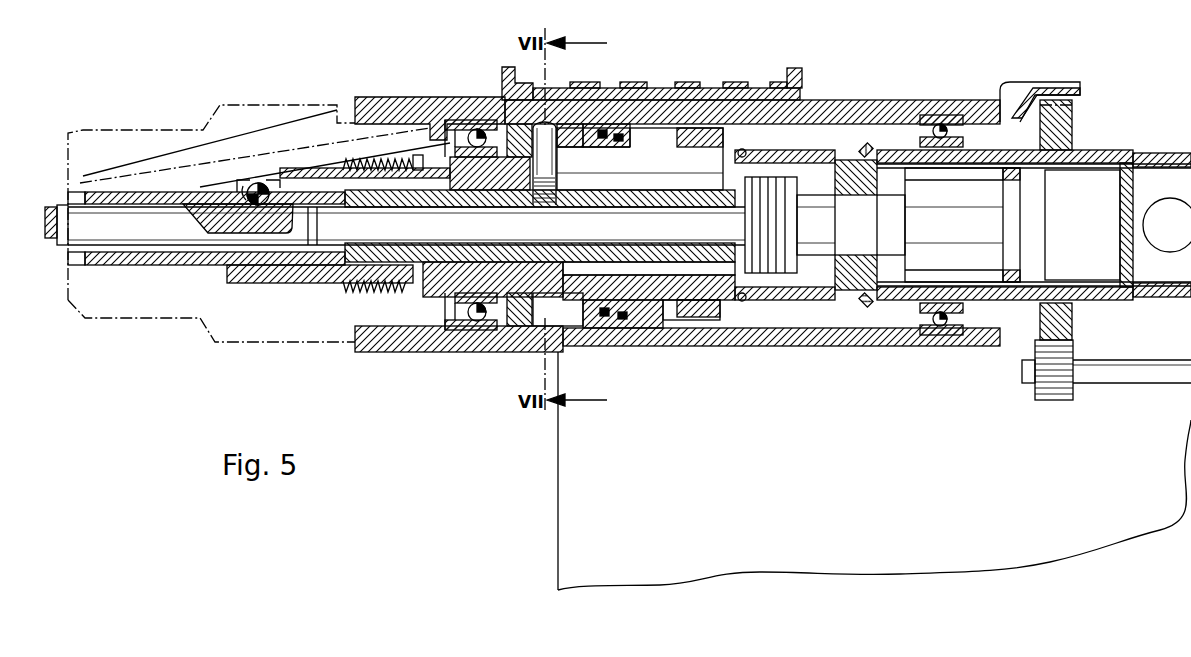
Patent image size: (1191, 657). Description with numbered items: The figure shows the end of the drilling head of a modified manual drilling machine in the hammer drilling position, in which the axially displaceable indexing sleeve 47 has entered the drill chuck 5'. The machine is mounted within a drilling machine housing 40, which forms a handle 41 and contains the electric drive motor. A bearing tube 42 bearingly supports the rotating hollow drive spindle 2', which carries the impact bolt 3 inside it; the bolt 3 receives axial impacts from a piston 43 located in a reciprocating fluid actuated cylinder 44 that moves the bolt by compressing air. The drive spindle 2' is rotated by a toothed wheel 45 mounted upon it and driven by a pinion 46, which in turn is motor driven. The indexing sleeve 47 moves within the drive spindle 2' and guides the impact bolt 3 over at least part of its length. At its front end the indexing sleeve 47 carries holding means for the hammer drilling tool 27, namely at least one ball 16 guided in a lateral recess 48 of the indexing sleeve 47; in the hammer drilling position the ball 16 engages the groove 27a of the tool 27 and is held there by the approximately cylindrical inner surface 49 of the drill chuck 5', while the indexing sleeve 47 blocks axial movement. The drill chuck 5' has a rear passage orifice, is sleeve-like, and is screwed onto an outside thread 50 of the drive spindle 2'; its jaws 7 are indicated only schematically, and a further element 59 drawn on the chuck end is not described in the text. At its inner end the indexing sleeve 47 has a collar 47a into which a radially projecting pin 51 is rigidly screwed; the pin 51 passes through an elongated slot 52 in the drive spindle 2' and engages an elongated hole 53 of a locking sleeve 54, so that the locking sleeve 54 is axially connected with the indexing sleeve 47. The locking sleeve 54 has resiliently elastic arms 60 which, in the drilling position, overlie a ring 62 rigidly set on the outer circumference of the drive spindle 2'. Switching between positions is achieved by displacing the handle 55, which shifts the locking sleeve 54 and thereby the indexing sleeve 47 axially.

The drive spindle 2' is at (720, 264).
The impact bolt 3 is at (514, 236).
The drill chuck 5' is at (211, 204).
The jaws 7 is at (317, 113).
The ball 16 is at (258, 183).
The hammer drilling tool 27 is at (108, 217).
The groove 27a is at (213, 222).
The drilling machine housing 40 is at (556, 533).
The handle 41 is at (850, 492).
The bearing tube 42 is at (850, 104).
The piston 43 is at (978, 248).
The cylinder 44 is at (1083, 170).
The toothed wheel 45 is at (1064, 124).
The pinion 46 is at (1057, 403).
The indexing sleeve 47 is at (223, 258).
The collar 47a is at (556, 260).
The lateral recess 48 is at (244, 192).
The cylindrical inner surface 49 is at (250, 180).
The outside thread 50 is at (360, 262).
The pin 51 is at (548, 162).
The elongated slot 52 is at (671, 160).
The elongated hole 53 is at (500, 125).
The locking sleeve 54 is at (576, 330).
The handle 55 is at (694, 86).
The nut 59 is at (388, 183).
The resiliently elastic arms 60 is at (708, 312).
The ring 62 is at (862, 144).